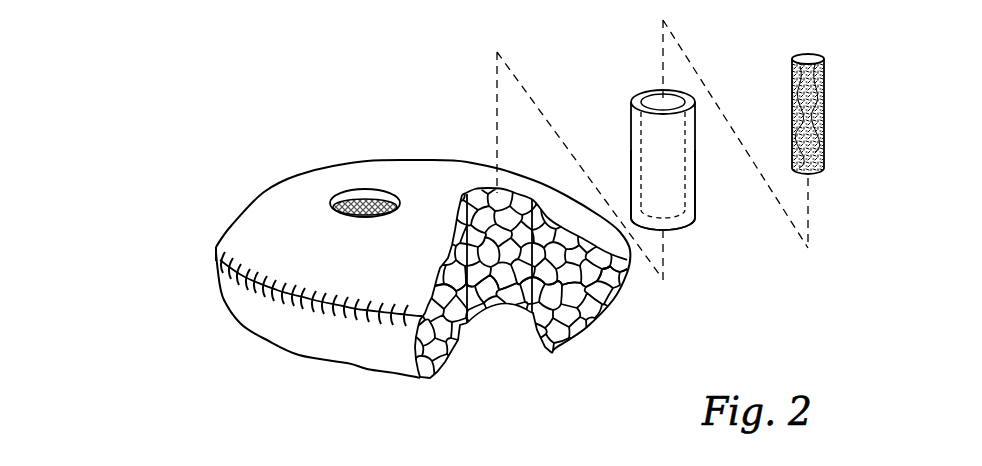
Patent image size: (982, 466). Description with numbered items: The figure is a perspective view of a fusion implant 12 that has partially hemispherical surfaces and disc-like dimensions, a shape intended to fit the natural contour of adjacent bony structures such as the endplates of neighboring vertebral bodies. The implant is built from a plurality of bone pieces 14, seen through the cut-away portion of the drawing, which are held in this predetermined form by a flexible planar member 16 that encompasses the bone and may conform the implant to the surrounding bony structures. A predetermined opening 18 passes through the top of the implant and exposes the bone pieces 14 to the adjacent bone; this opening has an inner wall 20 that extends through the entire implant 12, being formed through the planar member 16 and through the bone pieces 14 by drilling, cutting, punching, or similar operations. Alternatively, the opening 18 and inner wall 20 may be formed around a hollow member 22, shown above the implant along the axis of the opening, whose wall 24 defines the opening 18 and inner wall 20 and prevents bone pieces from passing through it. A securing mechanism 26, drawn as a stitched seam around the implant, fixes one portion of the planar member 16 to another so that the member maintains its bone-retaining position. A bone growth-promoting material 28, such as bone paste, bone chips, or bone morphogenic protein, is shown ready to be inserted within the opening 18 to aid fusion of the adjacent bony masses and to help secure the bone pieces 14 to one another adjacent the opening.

The fusion implant 12 is at (121, 197).
The bone pieces 14 is at (450, 346).
The flexible planar member 16 is at (363, 342).
The predetermined opening 18 is at (331, 203).
The inner wall 20 is at (473, 188).
The hollow member 22 is at (643, 70).
The wall 24 is at (696, 196).
The securing mechanism 26 is at (269, 304).
The bone growth-promoting material 28 is at (810, 98).